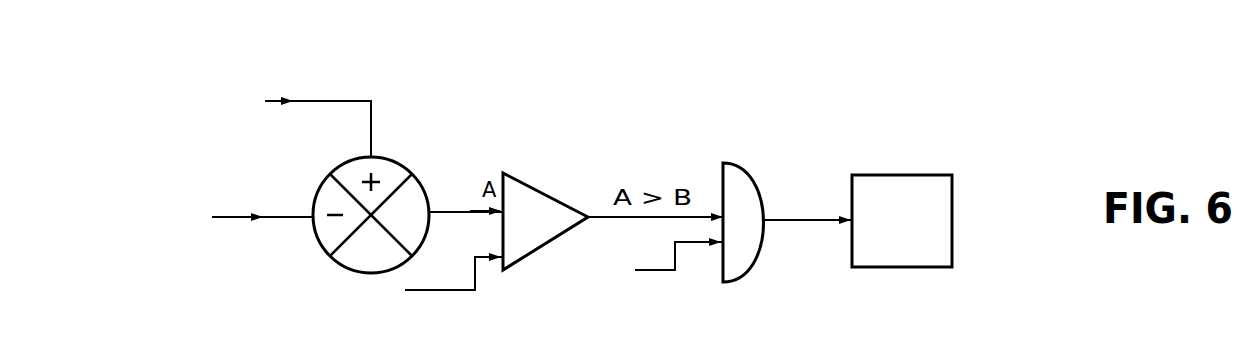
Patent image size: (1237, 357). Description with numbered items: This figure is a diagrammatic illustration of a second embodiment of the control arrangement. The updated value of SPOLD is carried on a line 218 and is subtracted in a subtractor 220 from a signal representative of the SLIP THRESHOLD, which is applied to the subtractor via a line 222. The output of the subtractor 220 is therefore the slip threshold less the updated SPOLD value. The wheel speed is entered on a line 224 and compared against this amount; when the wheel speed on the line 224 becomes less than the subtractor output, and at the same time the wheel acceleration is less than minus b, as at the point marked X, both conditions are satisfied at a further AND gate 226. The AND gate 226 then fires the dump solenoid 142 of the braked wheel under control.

The line 218 is at (371, 148).
The subtractor 220 is at (350, 262).
The line 222 is at (230, 218).
The line 224 is at (452, 291).
The further AND gate 226 is at (748, 258).
The dump solenoid 142 is at (952, 240).